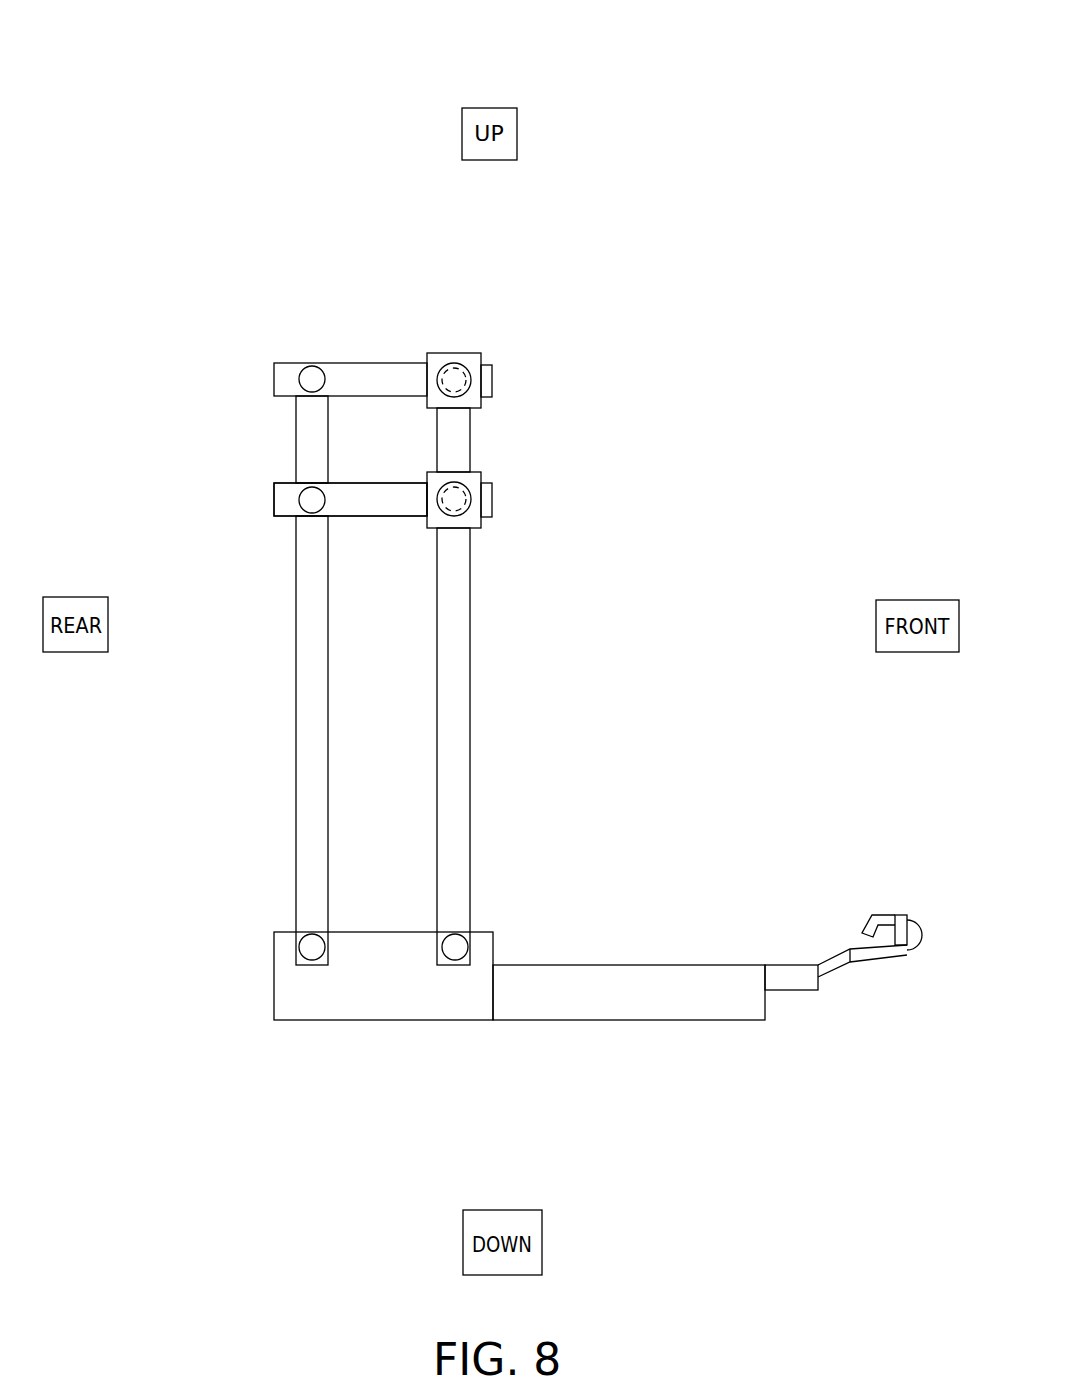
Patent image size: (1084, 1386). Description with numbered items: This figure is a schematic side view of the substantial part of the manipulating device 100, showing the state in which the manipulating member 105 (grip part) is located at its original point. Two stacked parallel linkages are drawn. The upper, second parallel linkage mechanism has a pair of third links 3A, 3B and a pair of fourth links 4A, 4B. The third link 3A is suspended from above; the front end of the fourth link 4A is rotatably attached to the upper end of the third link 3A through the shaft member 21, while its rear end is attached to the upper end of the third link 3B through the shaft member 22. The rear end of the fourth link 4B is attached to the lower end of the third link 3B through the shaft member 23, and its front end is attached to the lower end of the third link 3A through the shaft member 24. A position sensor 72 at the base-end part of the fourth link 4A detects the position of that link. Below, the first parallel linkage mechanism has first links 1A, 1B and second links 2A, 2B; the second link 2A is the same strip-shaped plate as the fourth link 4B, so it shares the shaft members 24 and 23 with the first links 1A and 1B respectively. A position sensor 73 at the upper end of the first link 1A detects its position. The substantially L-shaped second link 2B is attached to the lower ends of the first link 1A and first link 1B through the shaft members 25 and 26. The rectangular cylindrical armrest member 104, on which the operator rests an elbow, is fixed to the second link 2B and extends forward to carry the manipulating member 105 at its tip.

The manipulating device 100 is at (506, 65).
The first link 1A is at (456, 684).
The first link 1B is at (312, 665).
The second link 2A is at (383, 504).
The second link 2B is at (292, 988).
The third link 3A is at (462, 438).
The third link 3B is at (310, 445).
The fourth link 4A is at (381, 373).
The fourth link 4B is at (350, 571).
The shaft member 21 is at (497, 377).
The shaft member 22 is at (298, 383).
The shaft member 23 is at (298, 500).
The shaft member 24 is at (497, 498).
The shaft member 25 is at (462, 958).
The shaft member 26 is at (315, 958).
The position sensor 72 is at (470, 362).
The position sensor 73 is at (470, 520).
The armrest member 104 is at (630, 977).
The manipulating member 105 is at (831, 936).